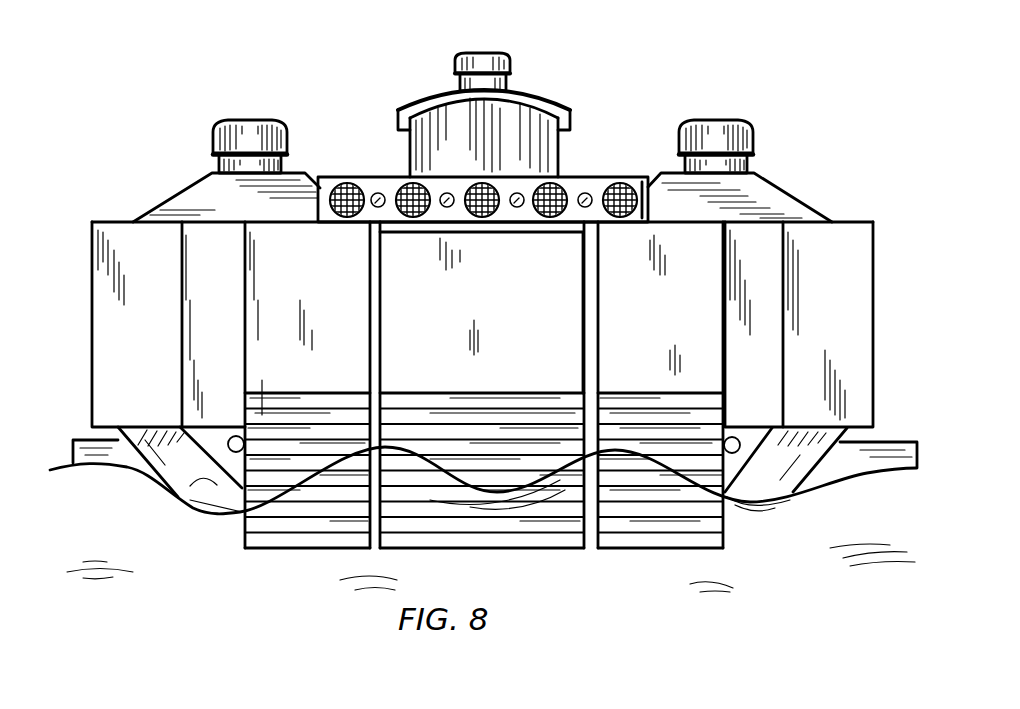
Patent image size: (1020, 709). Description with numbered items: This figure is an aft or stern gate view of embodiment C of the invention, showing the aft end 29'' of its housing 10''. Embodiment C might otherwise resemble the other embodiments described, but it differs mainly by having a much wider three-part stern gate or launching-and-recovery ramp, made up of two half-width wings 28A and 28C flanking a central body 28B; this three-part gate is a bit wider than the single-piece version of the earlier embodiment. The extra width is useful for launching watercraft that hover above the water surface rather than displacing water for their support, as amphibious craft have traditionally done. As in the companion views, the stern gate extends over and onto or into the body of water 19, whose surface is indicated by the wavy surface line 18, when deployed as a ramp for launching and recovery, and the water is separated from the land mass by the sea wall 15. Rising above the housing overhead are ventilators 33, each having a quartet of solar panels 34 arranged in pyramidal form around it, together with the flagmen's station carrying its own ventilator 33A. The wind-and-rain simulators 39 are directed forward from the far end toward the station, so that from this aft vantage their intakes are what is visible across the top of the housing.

The housing 10'' is at (78, 311).
The sea wall 15 is at (88, 440).
The wavy surface line 18 is at (185, 488).
The body of water 19 is at (162, 585).
The half-width wing 28A is at (340, 548).
The body 28B is at (440, 548).
The half-width wing 28C is at (643, 550).
The aft end 29'' is at (463, 358).
The ventilator 33 is at (248, 120).
The ventilator 33A is at (500, 52).
The solar panel 34 is at (187, 187).
The wind-and-rain simulator 39 is at (593, 187).
The embodiment C is at (160, 115).